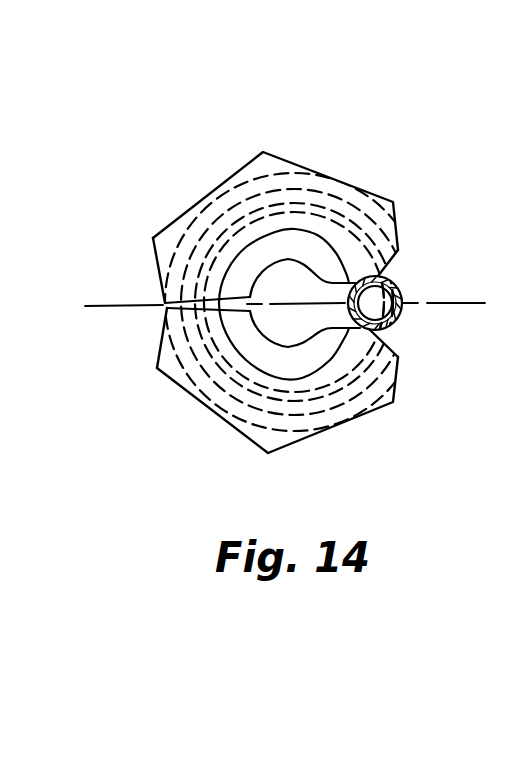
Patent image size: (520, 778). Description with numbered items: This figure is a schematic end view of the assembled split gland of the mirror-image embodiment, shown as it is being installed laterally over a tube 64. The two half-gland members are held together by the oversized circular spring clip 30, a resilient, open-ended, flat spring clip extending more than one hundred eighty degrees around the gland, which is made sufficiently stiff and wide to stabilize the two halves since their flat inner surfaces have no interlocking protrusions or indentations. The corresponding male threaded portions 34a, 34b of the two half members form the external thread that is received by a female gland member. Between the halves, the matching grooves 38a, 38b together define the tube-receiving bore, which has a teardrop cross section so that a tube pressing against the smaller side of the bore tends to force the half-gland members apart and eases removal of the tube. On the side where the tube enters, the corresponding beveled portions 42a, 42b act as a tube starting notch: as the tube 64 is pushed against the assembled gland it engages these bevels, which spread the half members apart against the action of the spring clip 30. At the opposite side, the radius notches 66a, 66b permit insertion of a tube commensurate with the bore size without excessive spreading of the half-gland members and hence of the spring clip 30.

The circular spring clip 30 is at (186, 213).
The male threaded portion of first half member 34a is at (256, 218).
The male threaded portion of second half member 34b is at (268, 409).
The tube-receiving bore portion of first half member 38a is at (279, 262).
The tube-receiving bore portion of second half member 38b is at (272, 348).
The beveled portion of first half member 42a is at (384, 268).
The beveled portion of second half member 42b is at (386, 342).
The tube 64 is at (398, 318).
The radius notch of first half member 66a is at (162, 299).
The radius notch of second half member 66b is at (163, 307).